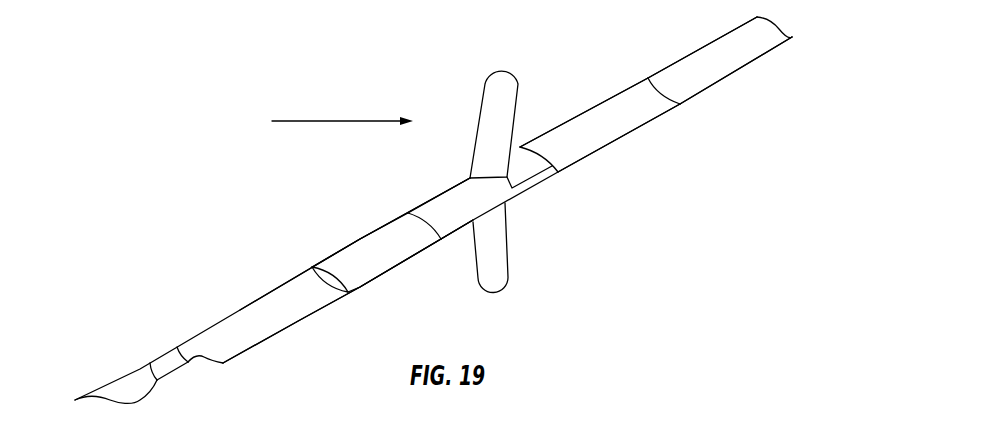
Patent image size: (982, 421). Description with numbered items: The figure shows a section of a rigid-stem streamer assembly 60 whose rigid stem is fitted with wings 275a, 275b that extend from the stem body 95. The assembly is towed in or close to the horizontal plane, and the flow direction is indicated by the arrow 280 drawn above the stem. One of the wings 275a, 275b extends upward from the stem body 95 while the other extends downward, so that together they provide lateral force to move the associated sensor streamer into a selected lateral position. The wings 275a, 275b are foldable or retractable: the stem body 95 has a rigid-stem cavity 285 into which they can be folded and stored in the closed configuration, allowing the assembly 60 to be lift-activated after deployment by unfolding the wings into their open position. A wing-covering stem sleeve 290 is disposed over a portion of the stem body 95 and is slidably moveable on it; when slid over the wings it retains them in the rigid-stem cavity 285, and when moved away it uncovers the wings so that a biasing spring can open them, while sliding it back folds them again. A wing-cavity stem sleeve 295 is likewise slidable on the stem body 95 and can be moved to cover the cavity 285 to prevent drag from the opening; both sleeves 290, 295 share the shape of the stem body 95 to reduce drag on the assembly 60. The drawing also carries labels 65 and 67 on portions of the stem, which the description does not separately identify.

The rigid-stem streamer assembly 60 is at (677, 217).
The elongated shaft 65 is at (386, 216).
The proximal shaft portion 67 is at (737, 70).
The stem body 95 is at (443, 193).
The arrow 280 is at (352, 120).
The rigid-stem cavity 285 is at (520, 163).
The wing-covering stem sleeve 290 is at (342, 250).
The wing-cavity stem sleeve 295 is at (612, 98).
The wing 275a is at (497, 103).
The wing 275b is at (508, 265).